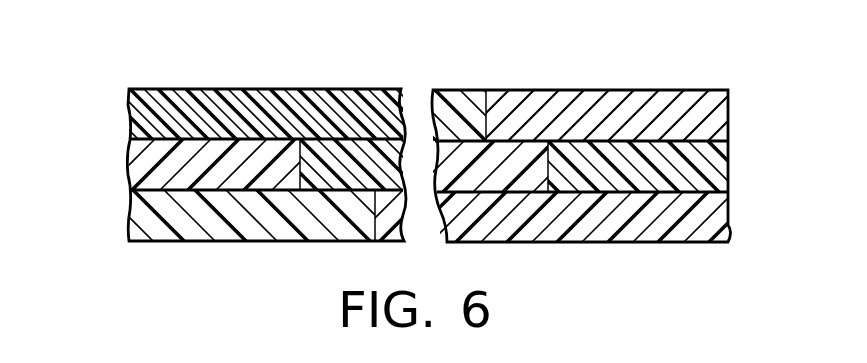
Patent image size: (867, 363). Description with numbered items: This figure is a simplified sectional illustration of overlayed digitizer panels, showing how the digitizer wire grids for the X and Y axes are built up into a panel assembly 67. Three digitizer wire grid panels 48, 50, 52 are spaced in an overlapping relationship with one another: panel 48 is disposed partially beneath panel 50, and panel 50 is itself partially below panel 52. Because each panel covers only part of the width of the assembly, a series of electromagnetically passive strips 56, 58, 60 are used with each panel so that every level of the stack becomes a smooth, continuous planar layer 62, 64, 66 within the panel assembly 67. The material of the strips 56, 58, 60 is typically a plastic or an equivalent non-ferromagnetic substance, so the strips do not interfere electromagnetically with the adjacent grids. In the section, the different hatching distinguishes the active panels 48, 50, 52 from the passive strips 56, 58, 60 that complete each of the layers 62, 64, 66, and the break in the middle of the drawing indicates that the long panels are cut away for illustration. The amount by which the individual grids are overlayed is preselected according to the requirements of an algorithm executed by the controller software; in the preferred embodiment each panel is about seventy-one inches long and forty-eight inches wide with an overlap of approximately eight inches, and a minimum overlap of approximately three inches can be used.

The panel 48 is at (240, 225).
The panel 50 is at (452, 170).
The panel 52 is at (612, 103).
The electromagnetically passive strip 56 is at (646, 238).
The electromagnetically passive strip 58 is at (596, 209).
The electromagnetically passive strip 60 is at (201, 100).
The planar layer 62 is at (236, 99).
The planar layer 64 is at (118, 172).
The planar layer 66 is at (243, 233).
The panel assembly 67 is at (592, 175).